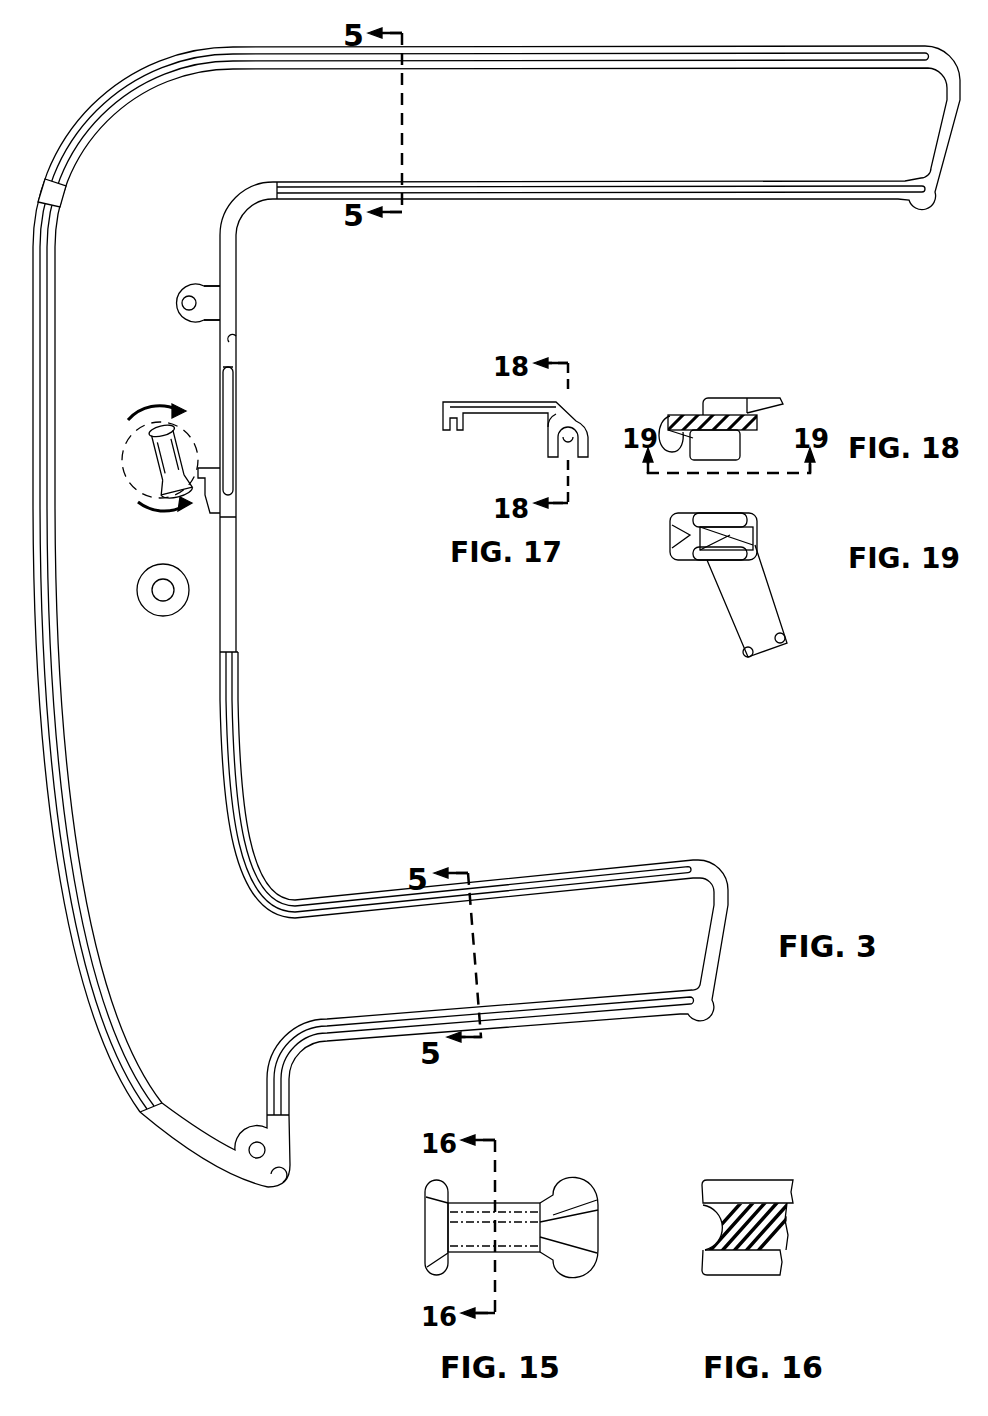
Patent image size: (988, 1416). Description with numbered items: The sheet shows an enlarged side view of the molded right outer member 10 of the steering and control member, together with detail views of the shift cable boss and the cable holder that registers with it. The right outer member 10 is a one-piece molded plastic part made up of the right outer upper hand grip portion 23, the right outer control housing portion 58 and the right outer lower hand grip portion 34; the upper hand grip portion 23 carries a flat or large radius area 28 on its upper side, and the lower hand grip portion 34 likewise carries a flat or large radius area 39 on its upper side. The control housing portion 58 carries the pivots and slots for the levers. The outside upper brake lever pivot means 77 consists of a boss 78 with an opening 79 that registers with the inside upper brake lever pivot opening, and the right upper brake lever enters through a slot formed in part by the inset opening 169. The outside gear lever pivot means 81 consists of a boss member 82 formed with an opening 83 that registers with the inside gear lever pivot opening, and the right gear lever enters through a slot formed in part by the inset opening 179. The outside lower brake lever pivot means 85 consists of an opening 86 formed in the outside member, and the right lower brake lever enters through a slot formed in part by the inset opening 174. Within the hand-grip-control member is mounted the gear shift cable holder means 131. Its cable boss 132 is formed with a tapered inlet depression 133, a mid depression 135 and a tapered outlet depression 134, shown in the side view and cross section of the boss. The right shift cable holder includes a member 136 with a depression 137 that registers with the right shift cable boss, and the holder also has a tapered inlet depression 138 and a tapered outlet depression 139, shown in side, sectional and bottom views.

In FIG. 3, the right outer member 10 is at (496, 614).
In FIG. 3, the flat or large radius area 28 is at (498, 47).
In FIG. 3, the right outer upper hand grip portion 23 is at (560, 200).
In FIG. 3, the flat or large radius area 39 is at (598, 860).
In FIG. 3, the right outer lower hand grip portion 34 is at (597, 1020).
In FIG. 3, the right outer control housing portion 58 is at (82, 1012).
In FIG. 3, the outside upper brake lever pivot means 77 is at (161, 260).
In FIG. 3, the boss 78 is at (181, 303).
In FIG. 3, the opening 79 is at (222, 303).
In FIG. 3, the inset opening 169 is at (238, 340).
In FIG. 3, the inset opening 179 is at (235, 583).
In FIG. 3, the boss member 82 is at (131, 616).
In FIG. 3, the outside gear lever pivot means 81 is at (143, 618).
In FIG. 3, the opening 83 is at (165, 603).
In FIG. 3, the outside lower brake lever pivot means 85 is at (248, 1122).
In FIG. 3, the opening 86 is at (263, 1150).
In FIG. 3, the inset opening 174 is at (280, 1184).
In FIG. 3, the gear shift cable holder means 131 is at (188, 473).
In FIG. 3, the cable boss 132 is at (223, 482).
In FIG. 16, the cable boss 132 is at (738, 1180).
In FIG. 3, the tapered inlet depression 133 is at (158, 508).
In FIG. 15, the tapered inlet depression 133 is at (600, 1210).
In FIG. 3, the tapered outlet depression 134 is at (150, 424).
In FIG. 15, the tapered outlet depression 134 is at (428, 1203).
In FIG. 3, the mid depression 135 is at (172, 463).
In FIG. 15, the mid depression 135 is at (523, 1245).
In FIG. 16, the mid depression 135 is at (716, 1212).
In FIG. 17, the member 136 is at (577, 418).
In FIG. 19, the member 136 is at (674, 562).
In FIG. 17, the depression 137 is at (575, 455).
In FIG. 18, the depression 137 is at (715, 435).
In FIG. 19, the depression 137 is at (717, 527).
In FIG. 18, the tapered inlet depression 138 is at (665, 435).
In FIG. 19, the tapered inlet depression 138 is at (682, 535).
In FIG. 18, the tapered outlet depression 139 is at (770, 418).
In FIG. 19, the tapered outlet depression 139 is at (752, 532).